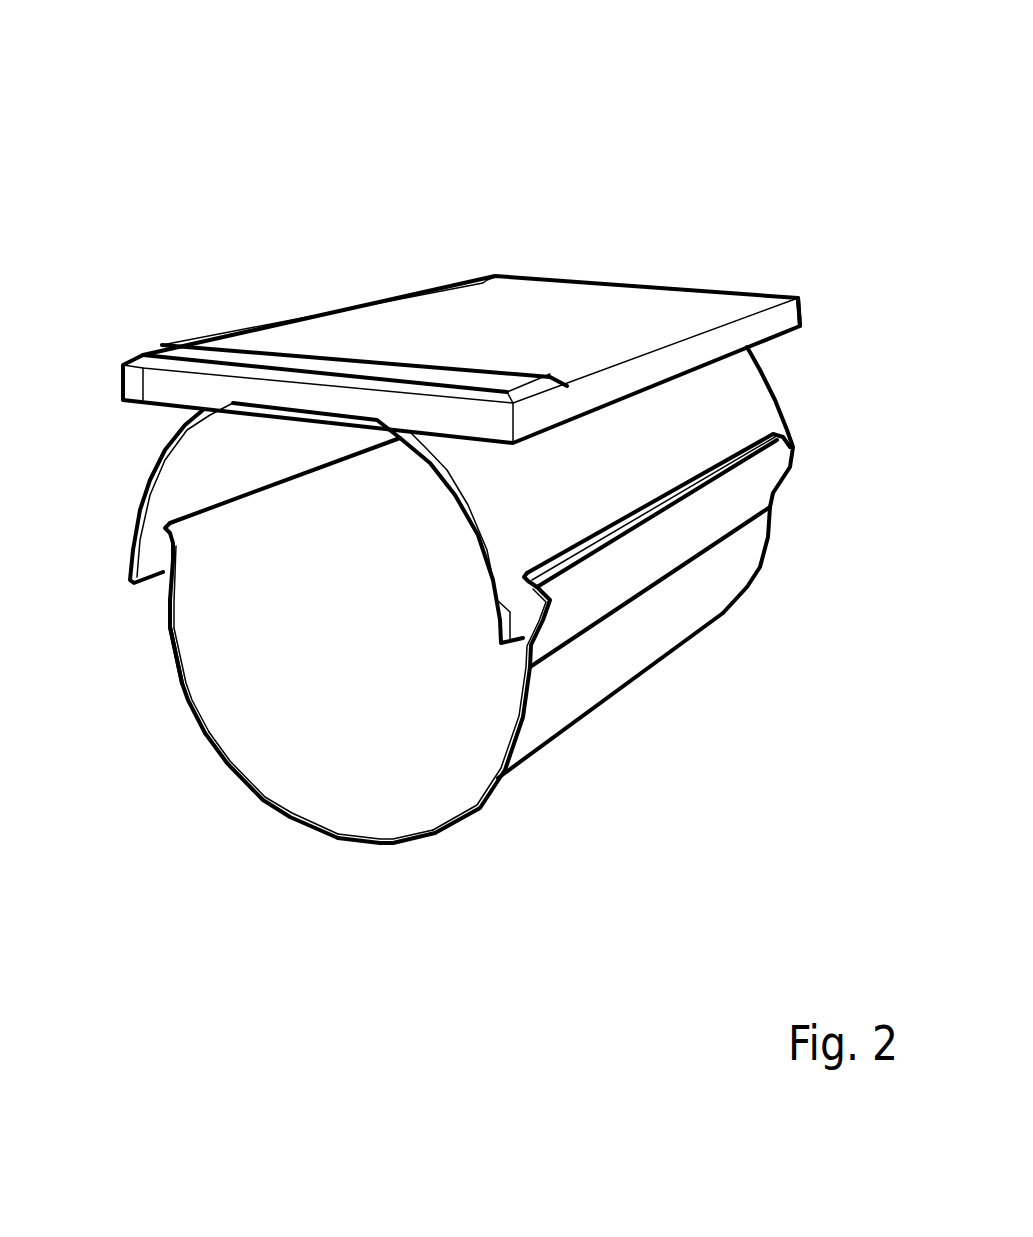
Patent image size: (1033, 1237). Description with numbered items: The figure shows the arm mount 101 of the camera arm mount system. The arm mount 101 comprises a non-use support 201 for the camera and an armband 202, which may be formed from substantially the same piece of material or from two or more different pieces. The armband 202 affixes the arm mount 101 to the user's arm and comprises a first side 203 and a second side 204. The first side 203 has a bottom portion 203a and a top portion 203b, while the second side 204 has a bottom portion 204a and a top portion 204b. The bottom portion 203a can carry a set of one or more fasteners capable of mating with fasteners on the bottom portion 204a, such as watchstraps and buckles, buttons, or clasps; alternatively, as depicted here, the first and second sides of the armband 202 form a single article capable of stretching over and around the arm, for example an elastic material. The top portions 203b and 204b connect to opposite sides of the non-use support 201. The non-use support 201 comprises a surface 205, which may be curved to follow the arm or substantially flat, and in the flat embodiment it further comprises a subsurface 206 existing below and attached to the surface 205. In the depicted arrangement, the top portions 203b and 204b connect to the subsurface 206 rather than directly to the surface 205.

The arm mount 101 is at (296, 123).
The non-use support 201 is at (741, 315).
The armband 202 is at (767, 560).
The first side 203 is at (516, 775).
The bottom portion 203a is at (440, 838).
The top portion 203b is at (566, 685).
The second side 204 is at (185, 704).
The bottom portion 204a is at (270, 812).
The top portion 204b is at (167, 629).
The surface 205 is at (470, 326).
The subsurface 206 is at (140, 488).